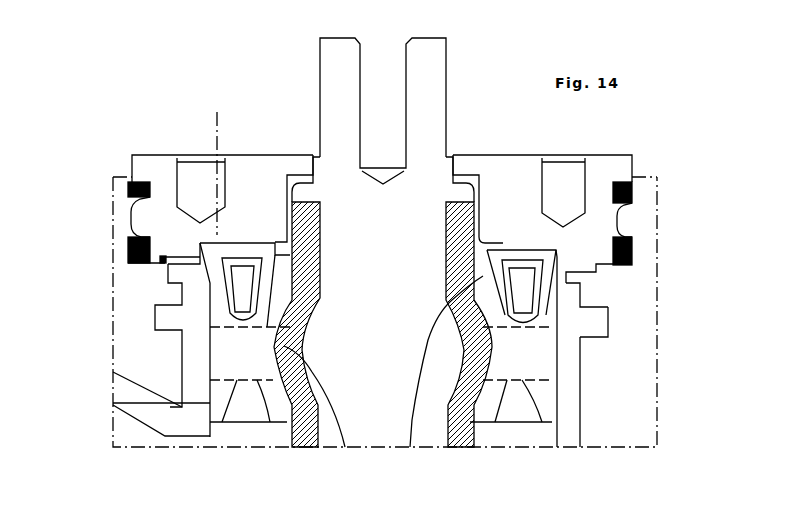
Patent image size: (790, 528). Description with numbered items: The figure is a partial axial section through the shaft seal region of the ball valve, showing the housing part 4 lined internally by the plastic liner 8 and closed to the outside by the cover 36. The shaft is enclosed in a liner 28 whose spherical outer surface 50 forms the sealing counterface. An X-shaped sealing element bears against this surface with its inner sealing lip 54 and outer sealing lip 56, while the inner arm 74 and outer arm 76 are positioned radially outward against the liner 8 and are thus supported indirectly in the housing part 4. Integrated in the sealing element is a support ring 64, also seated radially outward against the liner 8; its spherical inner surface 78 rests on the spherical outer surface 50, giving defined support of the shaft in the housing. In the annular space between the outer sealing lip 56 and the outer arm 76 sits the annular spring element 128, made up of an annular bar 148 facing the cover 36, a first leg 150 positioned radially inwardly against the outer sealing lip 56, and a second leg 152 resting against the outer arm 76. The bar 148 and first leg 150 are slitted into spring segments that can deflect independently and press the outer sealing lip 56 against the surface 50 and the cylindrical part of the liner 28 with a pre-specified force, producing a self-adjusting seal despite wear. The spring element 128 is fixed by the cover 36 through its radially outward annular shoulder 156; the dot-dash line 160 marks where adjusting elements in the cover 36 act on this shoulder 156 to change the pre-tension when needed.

The cover 36 is at (156, 170).
The dot-dash line 160 is at (217, 118).
The spring element 128 is at (507, 240).
The annular bar 148 is at (523, 258).
The annular shoulder 156 is at (550, 242).
The first leg 150 is at (500, 282).
The second leg 152 is at (582, 305).
The support ring 64 is at (518, 355).
The outer arm 76 is at (205, 284).
The plastic liner 8 is at (193, 330).
The housing part 4 is at (150, 362).
The inner arm 74 is at (113, 405).
The spherical inner surface 78 is at (345, 447).
The liner 28 is at (453, 425).
The outer sealing lip 56 is at (410, 447).
The inner sealing lip 54 is at (483, 403).
The spherical outer surface 50 is at (488, 347).